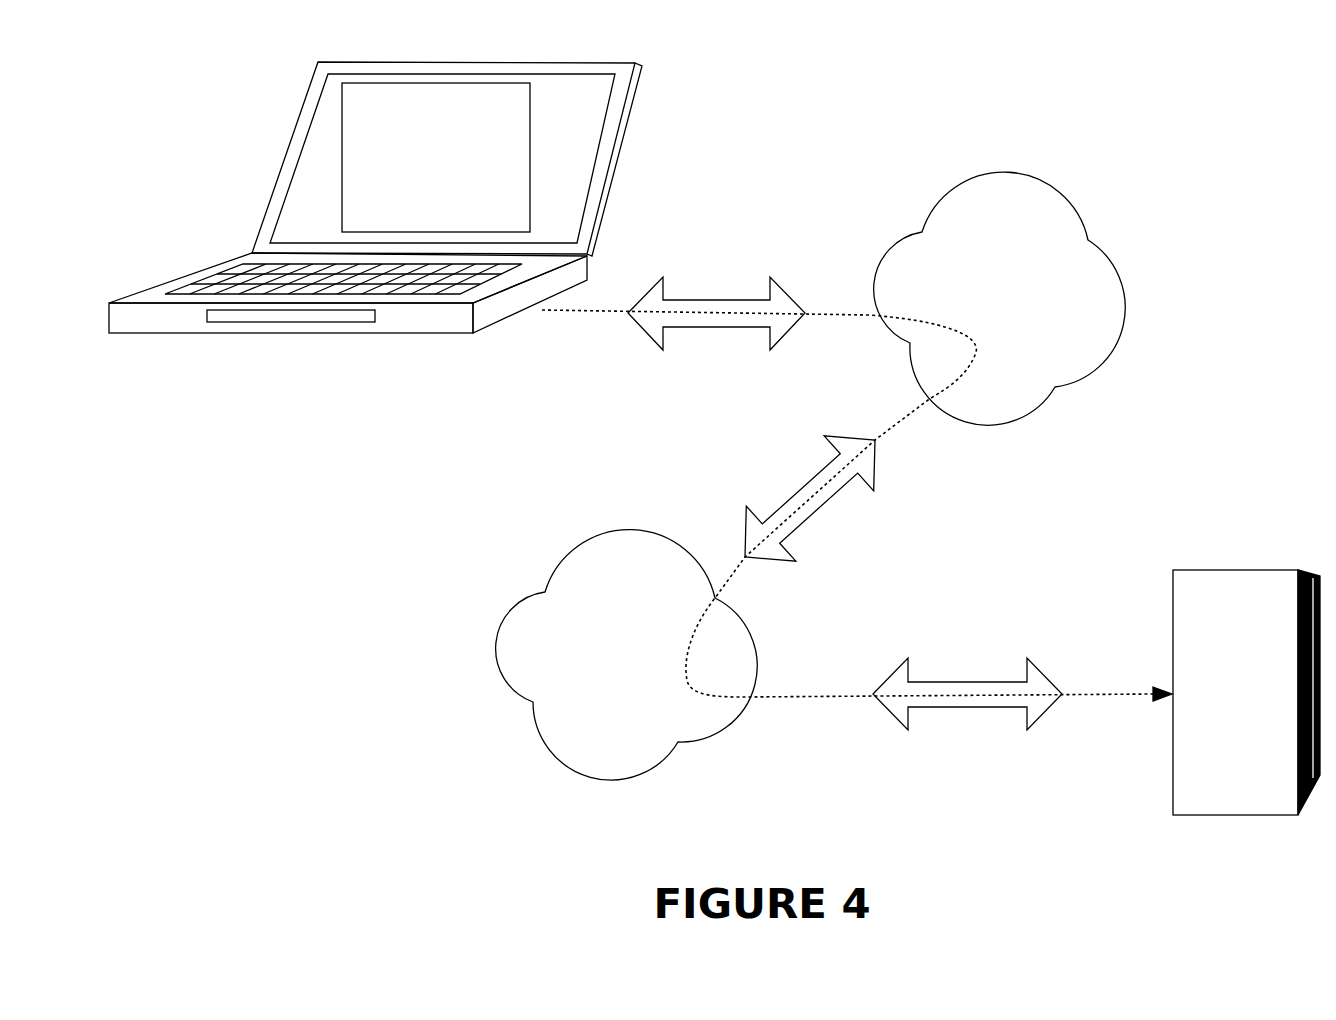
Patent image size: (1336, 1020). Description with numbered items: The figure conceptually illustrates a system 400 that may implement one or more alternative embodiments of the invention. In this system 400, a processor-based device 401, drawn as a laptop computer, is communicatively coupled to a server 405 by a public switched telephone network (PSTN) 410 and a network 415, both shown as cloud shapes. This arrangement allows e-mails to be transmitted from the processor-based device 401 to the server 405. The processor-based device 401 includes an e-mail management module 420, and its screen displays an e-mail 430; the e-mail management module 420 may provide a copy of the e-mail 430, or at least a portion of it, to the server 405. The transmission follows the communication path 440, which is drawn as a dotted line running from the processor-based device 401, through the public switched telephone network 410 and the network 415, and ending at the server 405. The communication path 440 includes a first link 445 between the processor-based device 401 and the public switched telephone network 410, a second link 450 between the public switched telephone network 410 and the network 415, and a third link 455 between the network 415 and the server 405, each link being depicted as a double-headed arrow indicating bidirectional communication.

The system 400 is at (470, 747).
The processor-based device 401 is at (200, 194).
The server 405 is at (1222, 665).
The public switched telephone network (PSTN) 410 is at (973, 316).
The network 415 is at (573, 671).
The e-mail management module 420 is at (285, 323).
The e-mail 430 is at (415, 180).
The communication path 440 is at (790, 700).
The link 445 is at (697, 298).
The link 450 is at (813, 515).
The link 455 is at (952, 677).